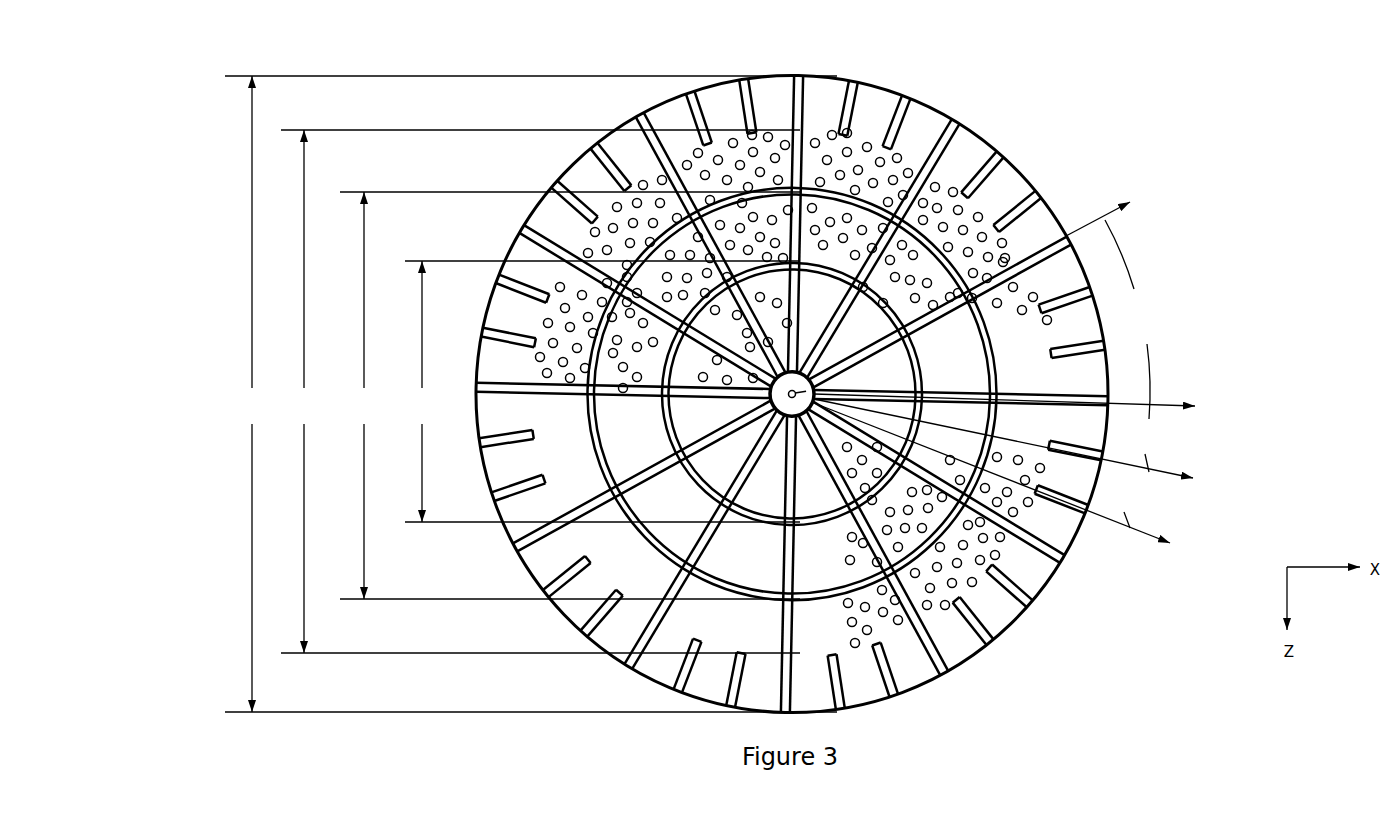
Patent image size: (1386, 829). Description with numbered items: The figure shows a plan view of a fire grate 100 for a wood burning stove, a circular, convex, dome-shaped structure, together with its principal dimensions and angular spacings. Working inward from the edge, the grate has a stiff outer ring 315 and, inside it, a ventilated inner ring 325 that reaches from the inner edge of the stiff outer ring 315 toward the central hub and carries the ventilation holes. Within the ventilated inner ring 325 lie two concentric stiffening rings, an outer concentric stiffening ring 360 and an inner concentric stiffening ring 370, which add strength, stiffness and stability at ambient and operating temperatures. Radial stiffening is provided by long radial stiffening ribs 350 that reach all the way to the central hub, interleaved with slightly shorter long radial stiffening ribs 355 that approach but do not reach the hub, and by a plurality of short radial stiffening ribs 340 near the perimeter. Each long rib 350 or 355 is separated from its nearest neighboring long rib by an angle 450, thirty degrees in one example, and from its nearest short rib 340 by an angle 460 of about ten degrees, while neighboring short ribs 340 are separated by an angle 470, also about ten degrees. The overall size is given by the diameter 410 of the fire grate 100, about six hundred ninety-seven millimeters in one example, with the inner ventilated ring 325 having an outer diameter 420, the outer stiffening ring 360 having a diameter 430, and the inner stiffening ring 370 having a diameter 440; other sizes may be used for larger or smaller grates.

The fire grate 100 is at (172, 93).
The stiff outer ring 315 is at (960, 190).
The ventilated inner ring 325 is at (932, 291).
The short radial stiffening rib 340 is at (992, 643).
The long radial stiffening rib 350 is at (963, 163).
The interleaved long radial stiffening rib 355 is at (920, 493).
The outer concentric stiffening ring 360 is at (893, 635).
The inner concentric stiffening ring 370 is at (957, 523).
The diameter 410 is at (531, 394).
The outer diameter 420 is at (540, 391).
The diameter 430 is at (570, 395).
The diameter 440 is at (602, 391).
The angle 450 is at (1004, 310).
The angle 460 is at (1003, 438).
The angle 470 is at (992, 473).